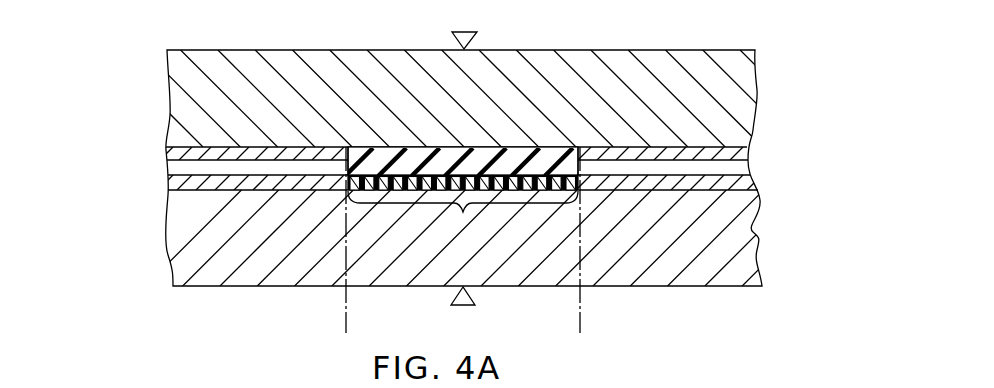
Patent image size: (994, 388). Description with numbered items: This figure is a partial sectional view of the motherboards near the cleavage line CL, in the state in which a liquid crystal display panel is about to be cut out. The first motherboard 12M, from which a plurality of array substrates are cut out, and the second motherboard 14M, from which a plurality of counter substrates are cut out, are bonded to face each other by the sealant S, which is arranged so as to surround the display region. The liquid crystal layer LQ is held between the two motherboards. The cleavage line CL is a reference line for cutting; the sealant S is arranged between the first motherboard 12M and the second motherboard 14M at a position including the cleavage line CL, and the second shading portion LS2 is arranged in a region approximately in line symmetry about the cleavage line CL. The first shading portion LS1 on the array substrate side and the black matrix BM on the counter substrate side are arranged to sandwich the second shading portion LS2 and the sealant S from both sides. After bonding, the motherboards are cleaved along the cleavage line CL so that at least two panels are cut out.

The second motherboard 14M is at (157, 97).
The first motherboard 12M is at (157, 232).
The liquid crystal layer LQ is at (170, 170).
The black matrix BM is at (243, 152).
The sealant S is at (382, 151).
The first shading portion LS1 is at (245, 183).
The second shading portion LS2 is at (463, 208).
The cleavage line CL is at (463, 170).